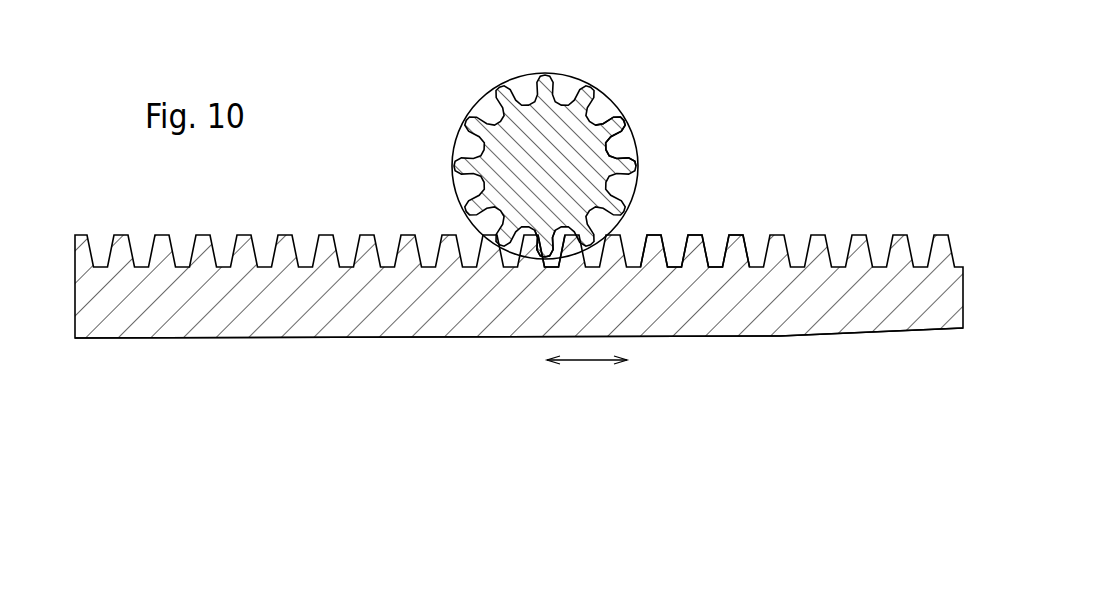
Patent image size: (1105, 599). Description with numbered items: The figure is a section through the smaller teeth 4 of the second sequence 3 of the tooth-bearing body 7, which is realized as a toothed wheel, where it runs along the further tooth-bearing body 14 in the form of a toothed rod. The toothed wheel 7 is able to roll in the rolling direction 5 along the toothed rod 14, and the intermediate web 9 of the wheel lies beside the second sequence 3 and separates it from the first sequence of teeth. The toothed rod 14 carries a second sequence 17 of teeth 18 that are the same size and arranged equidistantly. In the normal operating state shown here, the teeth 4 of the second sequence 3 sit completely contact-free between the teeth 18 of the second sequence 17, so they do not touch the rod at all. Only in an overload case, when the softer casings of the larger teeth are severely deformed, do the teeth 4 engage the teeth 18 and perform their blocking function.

The tooth-bearing body 7 is at (583, 70).
The second sequence 3 is at (605, 112).
The intermediate web 9 is at (618, 147).
The teeth 18 is at (657, 238).
The second sequence 17 is at (977, 248).
The teeth 4 is at (575, 236).
The rolling direction 5 is at (590, 361).
The further tooth-bearing body 14 is at (817, 337).